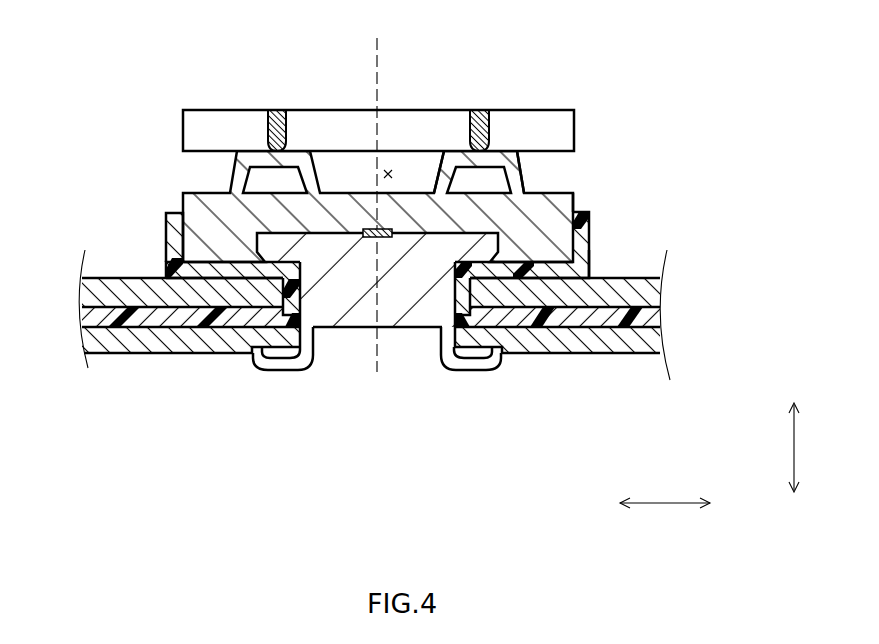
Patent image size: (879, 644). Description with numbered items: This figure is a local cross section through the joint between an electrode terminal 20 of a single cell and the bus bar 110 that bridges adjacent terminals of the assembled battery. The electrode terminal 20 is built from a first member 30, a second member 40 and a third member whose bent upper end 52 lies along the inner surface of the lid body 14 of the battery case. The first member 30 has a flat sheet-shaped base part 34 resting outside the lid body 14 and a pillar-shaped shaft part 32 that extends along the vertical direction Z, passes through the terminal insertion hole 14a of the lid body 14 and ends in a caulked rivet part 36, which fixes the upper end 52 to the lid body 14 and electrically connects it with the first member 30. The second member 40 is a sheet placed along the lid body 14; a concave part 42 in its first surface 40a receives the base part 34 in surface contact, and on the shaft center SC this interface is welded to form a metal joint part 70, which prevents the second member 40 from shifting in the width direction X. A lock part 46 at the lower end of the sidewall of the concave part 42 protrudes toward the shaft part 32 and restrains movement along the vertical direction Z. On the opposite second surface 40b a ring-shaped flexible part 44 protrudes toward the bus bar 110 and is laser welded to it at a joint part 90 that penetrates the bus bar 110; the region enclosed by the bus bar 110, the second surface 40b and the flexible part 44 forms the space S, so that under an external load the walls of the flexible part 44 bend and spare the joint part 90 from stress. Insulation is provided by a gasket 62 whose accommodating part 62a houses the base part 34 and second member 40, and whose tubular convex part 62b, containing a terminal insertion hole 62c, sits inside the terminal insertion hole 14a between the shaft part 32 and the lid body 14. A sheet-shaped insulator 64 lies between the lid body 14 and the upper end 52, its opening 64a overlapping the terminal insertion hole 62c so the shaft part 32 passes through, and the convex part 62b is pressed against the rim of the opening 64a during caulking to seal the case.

The lid body 14 is at (653, 288).
The terminal insertion hole 14a is at (466, 318).
The electrode terminal 20 is at (657, 147).
The first member 30 is at (399, 333).
The shaft part 32 is at (420, 292).
The base part 34 is at (500, 258).
The rivet part 36 is at (455, 362).
The second member 40 is at (580, 202).
The first surface 40a is at (580, 270).
The second surface 40b is at (572, 195).
The concave part 42 is at (523, 188).
The flexible part 44 is at (240, 170).
The lock part 46 is at (520, 273).
The upper end 52 is at (657, 343).
The gasket 62 is at (167, 232).
The accommodating part 62a is at (183, 222).
The convex part 62b is at (287, 318).
The terminal insertion hole 62c is at (285, 290).
The insulator 64 is at (93, 318).
The opening 64a is at (304, 368).
The metal joint part 70 is at (371, 239).
The joint part 90 is at (274, 108).
The bus bar 110 is at (548, 110).
The space S is at (389, 171).
The shaft center SC is at (377, 45).
The width direction X is at (665, 518).
The vertical direction Z is at (806, 447).